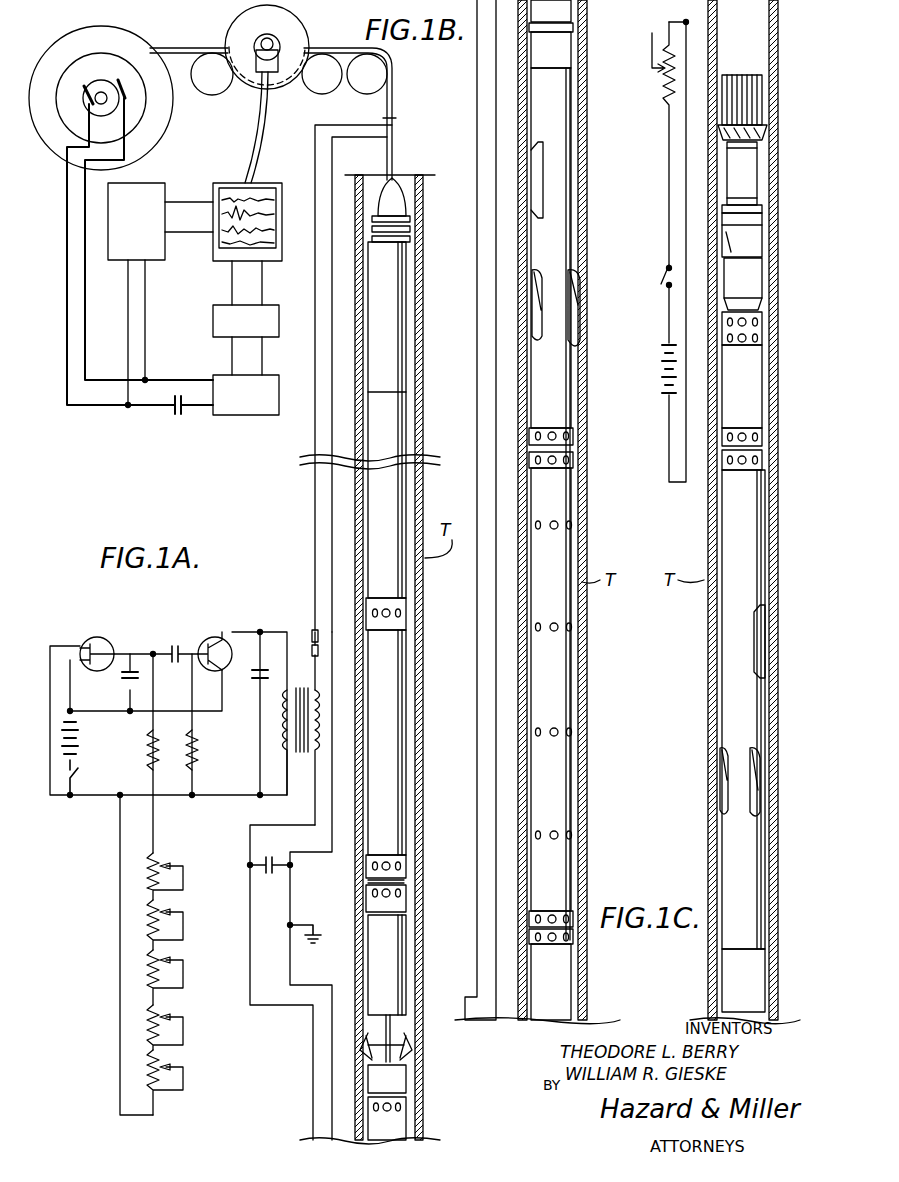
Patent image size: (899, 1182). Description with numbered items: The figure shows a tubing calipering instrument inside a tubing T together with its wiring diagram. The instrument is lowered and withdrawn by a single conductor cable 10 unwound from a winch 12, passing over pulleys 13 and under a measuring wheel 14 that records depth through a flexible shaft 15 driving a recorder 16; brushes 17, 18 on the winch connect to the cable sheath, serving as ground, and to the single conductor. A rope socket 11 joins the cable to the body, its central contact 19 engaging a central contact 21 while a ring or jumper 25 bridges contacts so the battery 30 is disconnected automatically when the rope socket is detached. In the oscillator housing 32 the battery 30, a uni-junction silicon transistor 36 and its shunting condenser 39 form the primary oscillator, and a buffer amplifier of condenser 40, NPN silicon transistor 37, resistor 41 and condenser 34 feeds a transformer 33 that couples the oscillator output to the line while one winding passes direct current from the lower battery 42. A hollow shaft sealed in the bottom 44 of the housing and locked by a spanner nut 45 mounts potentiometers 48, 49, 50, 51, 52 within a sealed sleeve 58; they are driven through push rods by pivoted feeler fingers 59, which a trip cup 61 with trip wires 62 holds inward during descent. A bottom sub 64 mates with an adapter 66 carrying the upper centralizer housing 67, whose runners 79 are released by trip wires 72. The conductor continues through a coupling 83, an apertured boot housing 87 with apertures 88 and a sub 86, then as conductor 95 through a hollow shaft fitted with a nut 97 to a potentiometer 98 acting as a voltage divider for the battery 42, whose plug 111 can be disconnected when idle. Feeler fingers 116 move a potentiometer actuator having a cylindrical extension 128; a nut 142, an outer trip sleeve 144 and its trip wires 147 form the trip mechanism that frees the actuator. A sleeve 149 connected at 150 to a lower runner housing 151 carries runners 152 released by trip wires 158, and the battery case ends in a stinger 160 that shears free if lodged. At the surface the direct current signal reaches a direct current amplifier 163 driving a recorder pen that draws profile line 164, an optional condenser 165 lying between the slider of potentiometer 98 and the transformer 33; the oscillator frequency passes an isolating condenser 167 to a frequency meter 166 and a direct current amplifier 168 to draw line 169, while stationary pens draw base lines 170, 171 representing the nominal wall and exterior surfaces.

In FIG. 1B, the conductor cable 10 is at (395, 104).
In FIG. 1B, the rope socket 11 is at (382, 306).
In FIG. 1B, the winch 12 is at (102, 32).
In FIG. 1B, the pulleys 13 is at (212, 86).
In FIG. 1B, the measuring wheel 14 is at (285, 20).
In FIG. 1B, the flexible shaft 15 is at (264, 107).
In FIG. 1B, the recorder 16 is at (256, 190).
In FIG. 1B, the brush 17 is at (84, 86).
In FIG. 1B, the brush 18 is at (120, 80).
In FIG. 1A, the central contact 19 is at (312, 634).
In FIG. 1A, the central contact 21 is at (312, 650).
In FIG. 1A, the jumper 25 is at (80, 772).
In FIG. 1A, the battery 30 is at (78, 744).
In FIG. 1B, the oscillator housing 32 is at (400, 720).
In FIG. 1A, the transformer 33 is at (286, 742).
In FIG. 1A, the condenser 34 is at (260, 668).
In FIG. 1A, the uni-junction silicon transistor 36 is at (92, 638).
In FIG. 1A, the NPN silicon transistor 37 is at (210, 638).
In FIG. 1A, the condenser 39 is at (130, 672).
In FIG. 1A, the condenser 40 is at (175, 646).
In FIG. 1A, the resistor 41 is at (220, 748).
In FIG. 1C, the battery 42 is at (660, 350).
In FIG. 1B, the bottom 44 is at (400, 866).
In FIG. 1B, the spanner nut 45 is at (400, 905).
In FIG. 1A, the potentiometer 48 is at (150, 876).
In FIG. 1A, the potentiometer 49 is at (150, 920).
In FIG. 1A, the potentiometer 50 is at (150, 976).
In FIG. 1A, the potentiometer 51 is at (150, 1026).
In FIG. 1A, the potentiometer 52 is at (150, 1078).
In FIG. 1B, the sealed sleeve 58 is at (400, 950).
In FIG. 1B, the feeler fingers 59 is at (410, 1046).
In FIG. 1B, the trip cup 61 is at (398, 1082).
In FIG. 1B, the trip wires 62 is at (405, 1038).
In FIG. 1B, the bottom sub 64 is at (392, 1118).
In FIG. 1C, the bottom sub 64 is at (548, 14).
In FIG. 1C, the adapter 66 is at (554, 52).
In FIG. 1C, the upper centralizer housing 67 is at (560, 222).
In FIG. 1C, the trip wires 72 is at (572, 298).
In FIG. 1C, the runners 79 is at (536, 160).
In FIG. 1C, the coupling 83 is at (574, 434).
In FIG. 1C, the sub 86 is at (574, 914).
In FIG. 1C, the apertured boot housing 87 is at (556, 554).
In FIG. 1C, the apertures 88 is at (558, 630).
In FIG. 1C, the conductor 95 is at (652, 36).
In FIG. 1C, the nut 97 is at (572, 948).
In FIG. 1C, the potentiometer 98 is at (666, 102).
In FIG. 1C, the plug 111 is at (662, 270).
In FIG. 1C, the feeler fingers 116 is at (762, 120).
In FIG. 1C, the cylindrical extension 128 is at (750, 170).
In FIG. 1C, the nut 142 is at (760, 325).
In FIG. 1C, the outer trip sleeve 144 is at (758, 290).
In FIG. 1C, the trip wires 147 is at (762, 248).
In FIG. 1C, the sleeve 149 is at (750, 385).
In FIG. 1C, the connection 150 is at (760, 437).
In FIG. 1C, the lower runner housing 151 is at (726, 522).
In FIG. 1C, the runners 152 is at (756, 628).
In FIG. 1C, the trip wires 158 is at (755, 768).
In FIG. 1C, the stinger 160 is at (752, 944).
In FIG. 1B, the direct current amplifier 163 is at (124, 262).
In FIG. 1B, the line 164 is at (228, 236).
In FIG. 1A, the condenser 165 is at (268, 876).
In FIG. 1B, the frequency meter 166 is at (260, 416).
In FIG. 1B, the condenser 167 is at (180, 418).
In FIG. 1B, the direct current amplifier 168 is at (212, 316).
In FIG. 1B, the line 169 is at (228, 216).
In FIG. 1B, the base line 170 is at (268, 240).
In FIG. 1B, the second base line 171 is at (262, 200).